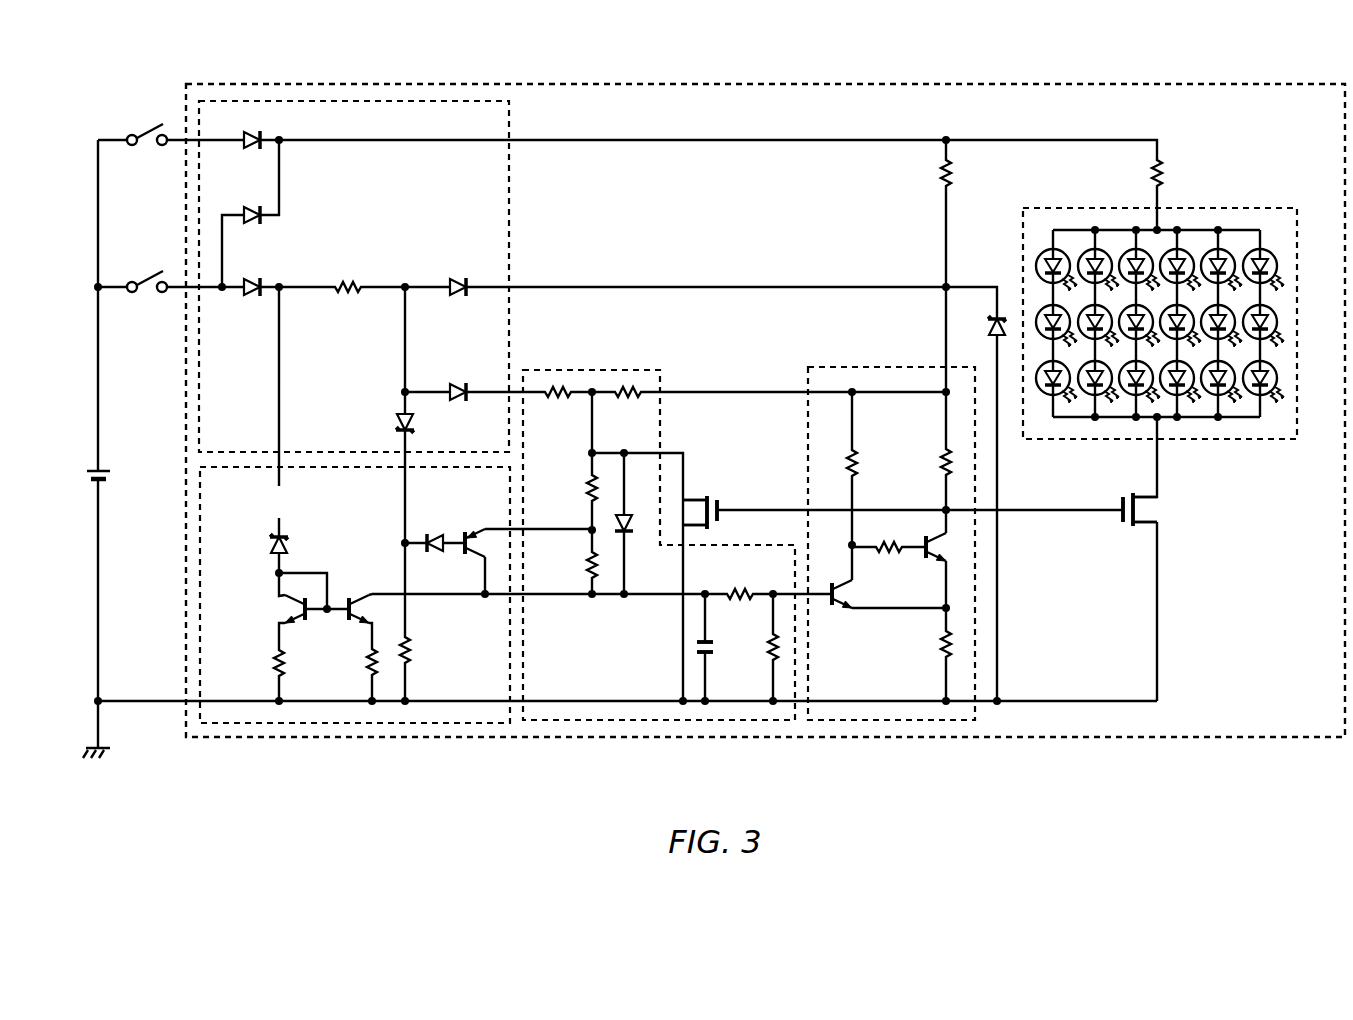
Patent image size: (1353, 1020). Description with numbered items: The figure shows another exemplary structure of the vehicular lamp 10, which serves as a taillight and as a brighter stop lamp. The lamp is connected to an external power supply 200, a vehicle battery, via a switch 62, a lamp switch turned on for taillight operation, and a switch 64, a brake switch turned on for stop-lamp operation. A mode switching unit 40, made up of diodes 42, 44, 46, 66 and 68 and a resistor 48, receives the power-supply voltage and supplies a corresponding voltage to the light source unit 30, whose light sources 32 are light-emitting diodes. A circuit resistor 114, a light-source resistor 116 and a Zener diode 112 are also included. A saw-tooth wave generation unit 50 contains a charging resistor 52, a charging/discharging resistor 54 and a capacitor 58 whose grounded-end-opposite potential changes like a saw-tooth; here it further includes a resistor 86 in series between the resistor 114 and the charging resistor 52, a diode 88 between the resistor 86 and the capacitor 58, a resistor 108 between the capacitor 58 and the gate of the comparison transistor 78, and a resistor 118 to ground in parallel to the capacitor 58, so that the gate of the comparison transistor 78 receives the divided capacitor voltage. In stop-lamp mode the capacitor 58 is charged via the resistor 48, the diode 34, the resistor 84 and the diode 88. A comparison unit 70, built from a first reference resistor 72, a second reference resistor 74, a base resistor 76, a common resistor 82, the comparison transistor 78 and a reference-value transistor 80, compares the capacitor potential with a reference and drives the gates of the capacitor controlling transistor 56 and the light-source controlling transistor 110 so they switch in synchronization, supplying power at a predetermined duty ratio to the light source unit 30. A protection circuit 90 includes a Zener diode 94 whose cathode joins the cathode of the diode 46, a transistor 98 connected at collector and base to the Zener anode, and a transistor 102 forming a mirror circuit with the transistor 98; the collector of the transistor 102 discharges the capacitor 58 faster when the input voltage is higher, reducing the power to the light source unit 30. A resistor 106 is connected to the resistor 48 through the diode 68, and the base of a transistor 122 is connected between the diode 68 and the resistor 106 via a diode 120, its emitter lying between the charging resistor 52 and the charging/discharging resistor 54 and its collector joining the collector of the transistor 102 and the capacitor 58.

The vehicular lamp 10 is at (893, 84).
The light source unit 30 is at (1236, 208).
The light source 32 is at (1282, 262).
The diode 34 is at (460, 384).
The mode switching unit 40 is at (509, 198).
The diode 42 is at (252, 150).
The diode 44 is at (252, 225).
The diode 46 is at (252, 297).
The resistor 48 is at (350, 281).
The saw-tooth wave generation unit 50 is at (590, 370).
The charging resistor 52 is at (584, 488).
The charging/discharging resistor 54 is at (584, 565).
The capacitor controlling transistor 56 is at (710, 496).
The capacitor 58 is at (710, 654).
The switch 62 is at (149, 152).
The switch 64 is at (149, 299).
The diode 66 is at (460, 279).
The diode 68 is at (397, 420).
The comparison unit 70 is at (876, 367).
The first reference resistor 72 is at (860, 462).
The second reference resistor 74 is at (940, 470).
The base resistor 76 is at (886, 556).
The comparison transistor 78 is at (843, 610).
The reference-value transistor 80 is at (934, 560).
The common resistor 82 is at (938, 646).
The resistor 84 is at (562, 400).
The resistor 86 is at (632, 400).
The diode 88 is at (630, 534).
The protection circuit 90 is at (200, 652).
The Zener diode 94 is at (270, 543).
The transistor 98 is at (293, 611).
The transistor 102 is at (357, 592).
The resistor 106 is at (414, 650).
The resistor 108 is at (736, 588).
The light-source controlling transistor 110 is at (1168, 508).
The Zener diode 112 is at (1000, 318).
The circuit resistor 114 is at (940, 178).
The light-source resistor 116 is at (1150, 176).
The resistor 118 is at (766, 644).
The diode 120 is at (434, 534).
The transistor 122 is at (470, 531).
The external power supply 200 is at (104, 470).